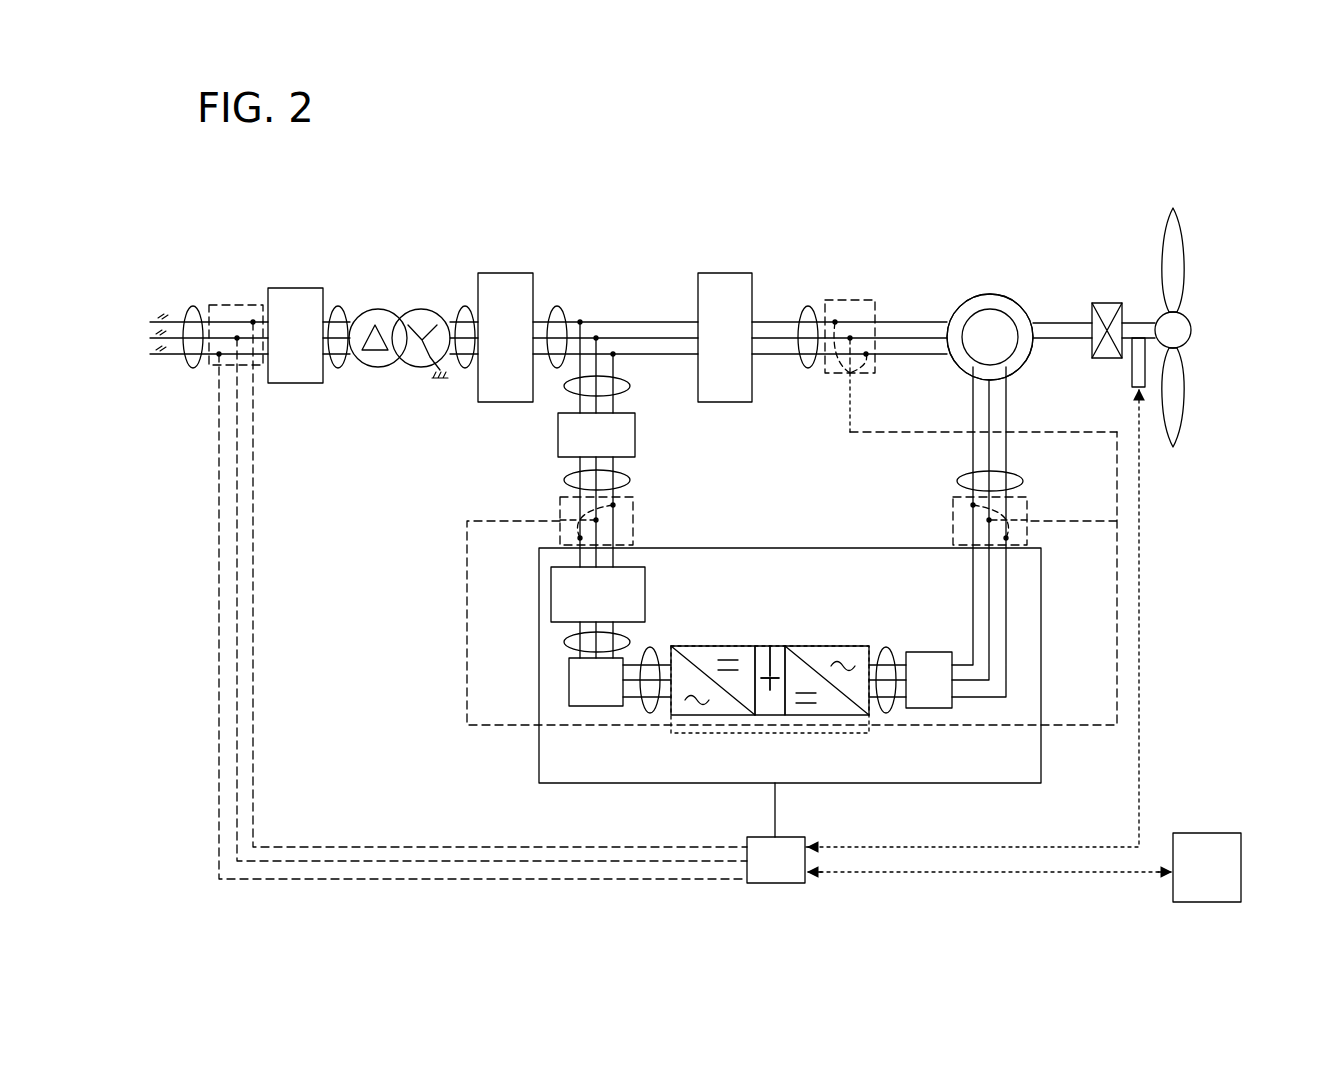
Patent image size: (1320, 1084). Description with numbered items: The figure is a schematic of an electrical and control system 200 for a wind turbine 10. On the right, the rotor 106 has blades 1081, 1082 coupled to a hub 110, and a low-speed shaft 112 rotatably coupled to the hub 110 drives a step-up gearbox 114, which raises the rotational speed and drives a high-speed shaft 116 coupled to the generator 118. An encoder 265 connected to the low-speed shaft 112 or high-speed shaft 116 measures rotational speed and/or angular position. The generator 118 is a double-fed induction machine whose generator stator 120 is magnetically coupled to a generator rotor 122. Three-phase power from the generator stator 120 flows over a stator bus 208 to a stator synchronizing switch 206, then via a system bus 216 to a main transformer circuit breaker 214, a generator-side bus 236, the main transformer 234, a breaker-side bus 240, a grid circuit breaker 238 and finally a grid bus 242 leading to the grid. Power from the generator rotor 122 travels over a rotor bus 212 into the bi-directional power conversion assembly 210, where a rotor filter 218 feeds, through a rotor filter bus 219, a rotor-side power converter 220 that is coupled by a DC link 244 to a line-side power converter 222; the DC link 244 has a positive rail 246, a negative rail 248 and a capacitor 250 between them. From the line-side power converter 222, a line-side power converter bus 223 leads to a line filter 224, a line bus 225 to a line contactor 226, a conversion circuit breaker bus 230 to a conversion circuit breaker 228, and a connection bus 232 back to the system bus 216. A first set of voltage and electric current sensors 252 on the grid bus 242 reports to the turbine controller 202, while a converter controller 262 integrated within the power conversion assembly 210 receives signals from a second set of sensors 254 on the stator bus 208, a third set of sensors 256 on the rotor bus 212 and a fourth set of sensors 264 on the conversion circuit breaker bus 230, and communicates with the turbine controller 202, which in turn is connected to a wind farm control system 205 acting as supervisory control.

The wind turbine 10 is at (1222, 297).
The rotor 106 is at (1222, 327).
The blade 1081 is at (1187, 265).
The blade 1082 is at (1187, 405).
The hub 110 is at (1191, 330).
The low-speed shaft 112 is at (1135, 323).
The step-up gearbox 114 is at (1100, 303).
The high-speed shaft 116 is at (1060, 322).
The generator 118 is at (993, 250).
The generator stator 120 is at (988, 296).
The generator rotor 122 is at (983, 318).
The electrical and control system 200 is at (241, 174).
The turbine controller 202 is at (756, 872).
The wind farm control system 205 is at (1187, 879).
The stator synchronizing switch 206 is at (728, 273).
The stator bus 208 is at (808, 306).
The power conversion assembly 210 is at (1041, 660).
The rotor bus 212 is at (1023, 481).
The main transformer circuit breaker 214 is at (505, 273).
The system bus 216 is at (557, 306).
The rotor filter 218 is at (925, 652).
The rotor filter bus 219 is at (886, 648).
The rotor-side power converter 220 is at (870, 712).
The line-side power converter 222 is at (672, 716).
The line-side power converter bus 223 is at (652, 648).
The line filter 224 is at (569, 690).
The line bus 225 is at (565, 642).
The line contactor 226 is at (551, 595).
The conversion circuit breaker 228 is at (635, 435).
The conversion circuit breaker bus 230 is at (627, 480).
The connection bus 232 is at (630, 386).
The main transformer 234 is at (420, 308).
The generator-side bus 236 is at (465, 303).
The grid circuit breaker 238 is at (285, 288).
The breaker-side bus 240 is at (338, 306).
The grid bus 242 is at (193, 306).
The DC link 244 is at (754, 608).
The positive rail 246 is at (755, 694).
The negative rail 248 is at (775, 718).
The capacitor 250 is at (767, 672).
The first set of voltage and electric current sensors 252 is at (210, 379).
The second set of voltage and electric current sensors 254 is at (866, 281).
The third set of voltage and electric current sensors 256 is at (938, 518).
The converter controller 262 is at (830, 733).
The fourth set of voltage and electric current sensors 264 is at (633, 520).
The encoder 265 is at (1132, 365).